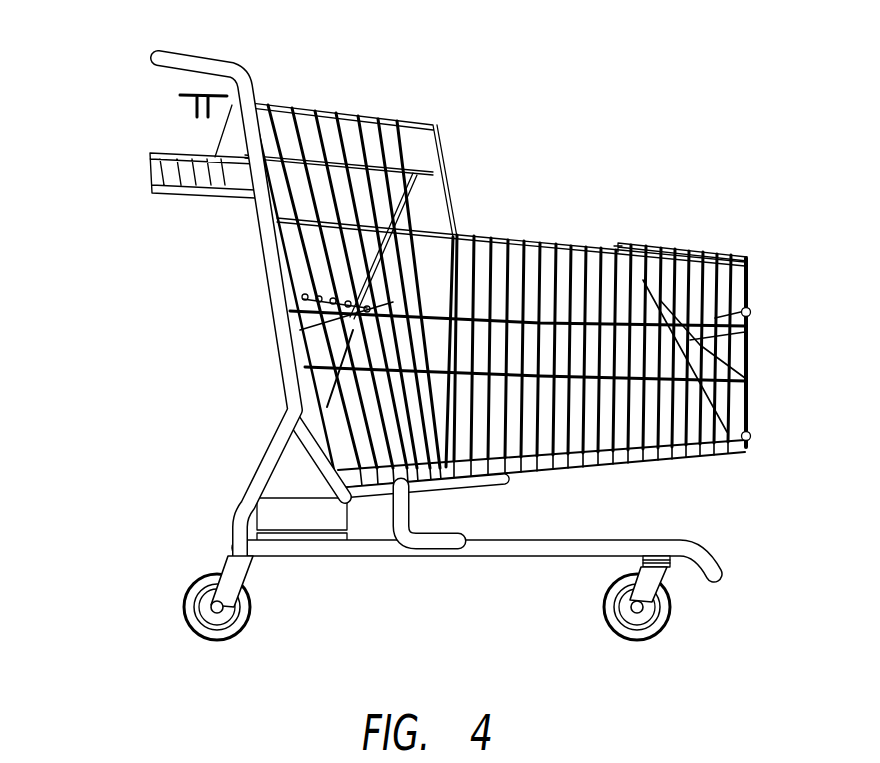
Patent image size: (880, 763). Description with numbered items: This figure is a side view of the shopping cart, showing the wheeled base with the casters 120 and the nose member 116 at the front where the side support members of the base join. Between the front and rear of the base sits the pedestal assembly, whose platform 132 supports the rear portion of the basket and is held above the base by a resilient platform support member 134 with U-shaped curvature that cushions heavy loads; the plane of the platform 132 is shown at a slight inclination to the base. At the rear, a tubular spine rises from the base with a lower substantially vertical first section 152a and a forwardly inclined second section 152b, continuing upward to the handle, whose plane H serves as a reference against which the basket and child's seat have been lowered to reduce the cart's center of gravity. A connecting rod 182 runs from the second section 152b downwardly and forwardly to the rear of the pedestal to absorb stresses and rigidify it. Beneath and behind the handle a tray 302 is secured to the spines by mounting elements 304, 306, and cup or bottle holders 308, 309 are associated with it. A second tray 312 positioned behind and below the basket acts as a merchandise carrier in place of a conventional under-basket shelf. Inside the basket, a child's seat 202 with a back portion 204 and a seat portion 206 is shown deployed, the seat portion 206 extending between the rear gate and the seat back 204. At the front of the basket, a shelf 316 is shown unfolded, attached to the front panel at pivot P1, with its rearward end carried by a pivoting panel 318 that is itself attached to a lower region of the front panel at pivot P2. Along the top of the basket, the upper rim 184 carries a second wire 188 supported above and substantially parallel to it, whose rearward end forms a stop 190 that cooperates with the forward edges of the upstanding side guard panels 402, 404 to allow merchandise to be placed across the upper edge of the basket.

The nose member 116 is at (722, 578).
The casters 120 is at (638, 636).
The platform 132 is at (465, 487).
The platform support member 134 is at (423, 542).
The first section 152a is at (185, 293).
The second section 152b is at (185, 293).
The connecting rod 182 is at (297, 458).
The upper rim 184 is at (492, 240).
The second wire 188 is at (656, 245).
The stop 190 is at (617, 245).
The child's seat 202 is at (358, 262).
The back portion 204 is at (405, 202).
The seat portion 206 is at (330, 305).
The tray 302 is at (160, 183).
The mounting element 304 is at (150, 172).
The mounting element 306 is at (160, 183).
The cup holder 308 is at (132, 95).
The cup holder 309 is at (195, 107).
The tray 312 is at (300, 534).
The shelf 316 is at (718, 310).
The pivoting panel 318 is at (733, 363).
The side guard panel 402 is at (350, 127).
The side guard panel 404 is at (340, 107).
The plane of the handle H is at (252, 470).
The pivot P1 is at (751, 312).
The pivot P2 is at (751, 437).